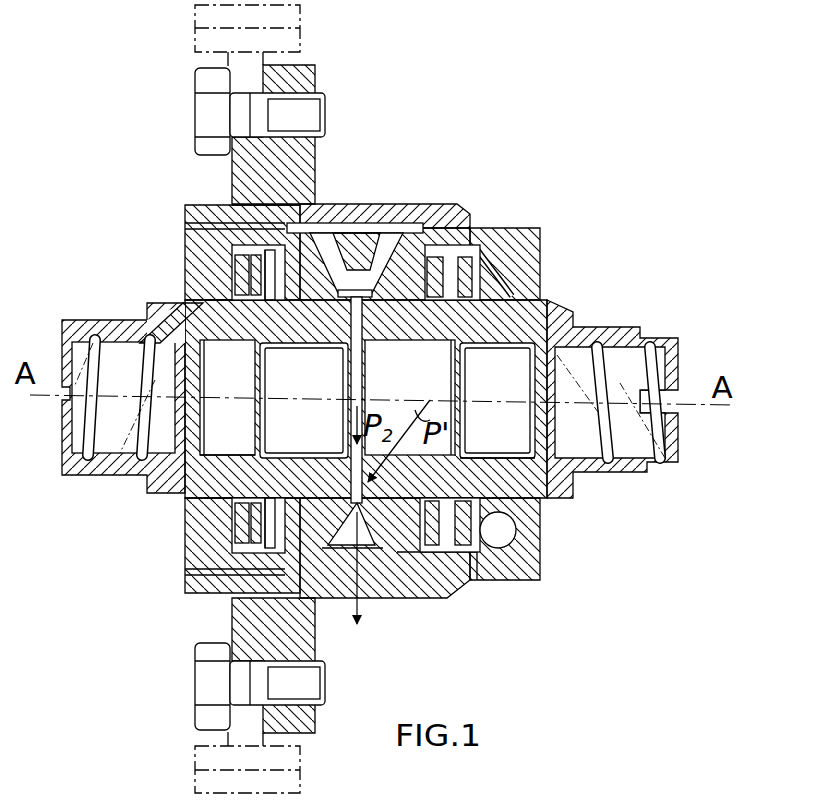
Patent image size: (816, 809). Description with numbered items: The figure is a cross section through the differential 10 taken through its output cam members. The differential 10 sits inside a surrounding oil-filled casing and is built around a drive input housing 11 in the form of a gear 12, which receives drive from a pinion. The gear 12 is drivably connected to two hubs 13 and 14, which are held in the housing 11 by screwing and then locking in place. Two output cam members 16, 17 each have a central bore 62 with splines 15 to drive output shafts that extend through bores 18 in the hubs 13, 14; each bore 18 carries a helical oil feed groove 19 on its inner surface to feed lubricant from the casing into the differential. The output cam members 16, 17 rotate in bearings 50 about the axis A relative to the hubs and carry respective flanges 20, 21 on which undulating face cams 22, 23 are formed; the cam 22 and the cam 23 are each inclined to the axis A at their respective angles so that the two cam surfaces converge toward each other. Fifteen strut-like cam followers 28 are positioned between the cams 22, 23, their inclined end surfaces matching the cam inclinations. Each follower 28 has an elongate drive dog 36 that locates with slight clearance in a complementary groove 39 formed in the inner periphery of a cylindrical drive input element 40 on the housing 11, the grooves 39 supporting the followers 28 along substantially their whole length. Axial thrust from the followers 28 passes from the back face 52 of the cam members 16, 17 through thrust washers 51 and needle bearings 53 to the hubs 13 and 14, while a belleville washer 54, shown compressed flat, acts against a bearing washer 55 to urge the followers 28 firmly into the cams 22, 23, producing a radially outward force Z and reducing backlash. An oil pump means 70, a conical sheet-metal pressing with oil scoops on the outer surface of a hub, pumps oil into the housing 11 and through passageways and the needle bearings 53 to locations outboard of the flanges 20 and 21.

The differential 10 is at (318, 76).
The drive input housing 11 is at (320, 198).
The gear 12 is at (192, 12).
The hub 13 is at (190, 238).
The hub 14 is at (556, 500).
The splines 15 is at (290, 343).
The output cam member 16 is at (262, 466).
The output cam member 17 is at (487, 470).
The bore 18 is at (112, 320).
The helical oil feed groove 19 is at (672, 350).
The flange 20 is at (236, 201).
The flange 21 is at (470, 252).
The undulating face cam 22 is at (340, 528).
The undulating face cam 23 is at (378, 528).
The cam follower 28 is at (412, 232).
The drive dog 36 is at (362, 240).
The groove 39 is at (374, 246).
The drive input element 40 is at (345, 206).
The bearing 50 is at (196, 502).
The thrust washer 51 is at (240, 592).
The back face 52 is at (240, 290).
The needle bearing 53 is at (258, 256).
The belleville washer 54 is at (256, 556).
The bearing washer 55 is at (238, 530).
The central bore 62 is at (222, 341).
The oil pump means 70 is at (500, 532).